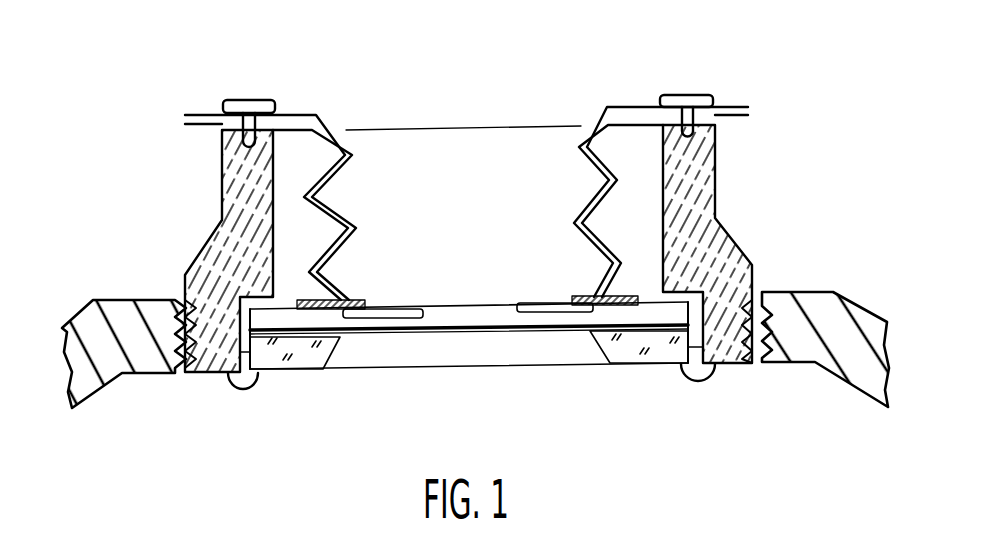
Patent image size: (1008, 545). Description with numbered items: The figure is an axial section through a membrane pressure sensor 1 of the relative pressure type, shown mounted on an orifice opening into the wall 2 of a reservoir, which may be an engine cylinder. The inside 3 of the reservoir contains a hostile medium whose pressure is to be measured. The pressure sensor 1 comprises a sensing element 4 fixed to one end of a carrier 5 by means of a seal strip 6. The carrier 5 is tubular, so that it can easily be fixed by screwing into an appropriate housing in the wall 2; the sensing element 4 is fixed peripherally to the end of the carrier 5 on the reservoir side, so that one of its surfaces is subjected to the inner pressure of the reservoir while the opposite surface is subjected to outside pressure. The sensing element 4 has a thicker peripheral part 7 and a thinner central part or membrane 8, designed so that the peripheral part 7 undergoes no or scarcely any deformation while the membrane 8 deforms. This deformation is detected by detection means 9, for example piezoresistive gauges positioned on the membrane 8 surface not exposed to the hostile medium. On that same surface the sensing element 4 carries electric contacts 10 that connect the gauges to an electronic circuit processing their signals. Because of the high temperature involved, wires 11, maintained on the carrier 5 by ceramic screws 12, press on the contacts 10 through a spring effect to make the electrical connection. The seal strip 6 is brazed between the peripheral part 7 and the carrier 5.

The pressure sensor 1 is at (196, 190).
The wall 2 is at (122, 378).
The inside 3 is at (651, 429).
The sensing element 4 is at (455, 292).
The carrier 5 is at (708, 173).
The seal strip 6 is at (242, 390).
The peripheral part 7 is at (318, 364).
The membrane 8 is at (477, 322).
The detection means 9 is at (398, 303).
The electric contacts 10 is at (357, 300).
The wires 11 is at (343, 130).
The ceramic screws 12 is at (232, 104).